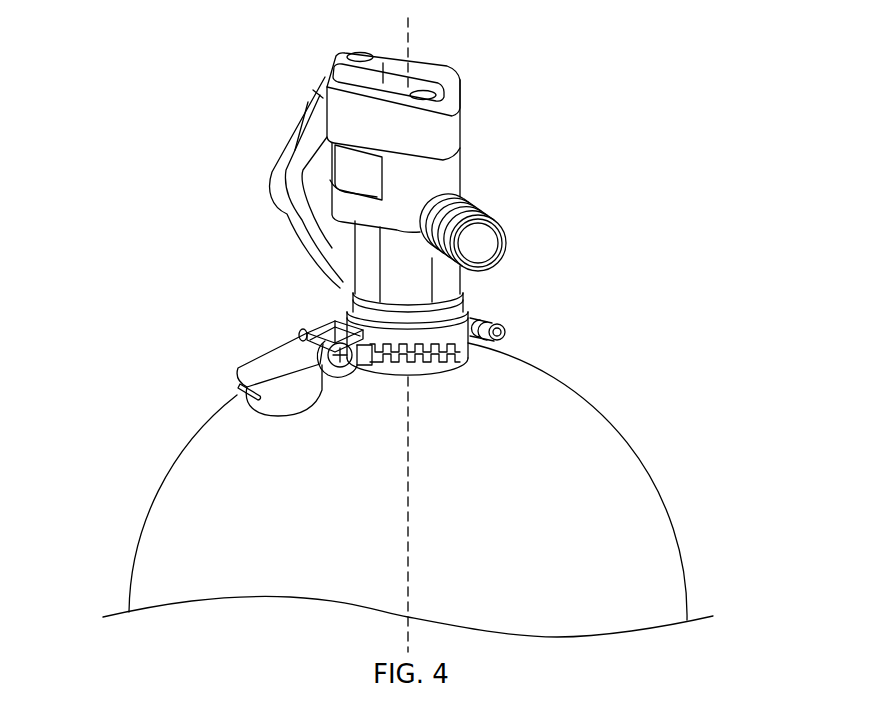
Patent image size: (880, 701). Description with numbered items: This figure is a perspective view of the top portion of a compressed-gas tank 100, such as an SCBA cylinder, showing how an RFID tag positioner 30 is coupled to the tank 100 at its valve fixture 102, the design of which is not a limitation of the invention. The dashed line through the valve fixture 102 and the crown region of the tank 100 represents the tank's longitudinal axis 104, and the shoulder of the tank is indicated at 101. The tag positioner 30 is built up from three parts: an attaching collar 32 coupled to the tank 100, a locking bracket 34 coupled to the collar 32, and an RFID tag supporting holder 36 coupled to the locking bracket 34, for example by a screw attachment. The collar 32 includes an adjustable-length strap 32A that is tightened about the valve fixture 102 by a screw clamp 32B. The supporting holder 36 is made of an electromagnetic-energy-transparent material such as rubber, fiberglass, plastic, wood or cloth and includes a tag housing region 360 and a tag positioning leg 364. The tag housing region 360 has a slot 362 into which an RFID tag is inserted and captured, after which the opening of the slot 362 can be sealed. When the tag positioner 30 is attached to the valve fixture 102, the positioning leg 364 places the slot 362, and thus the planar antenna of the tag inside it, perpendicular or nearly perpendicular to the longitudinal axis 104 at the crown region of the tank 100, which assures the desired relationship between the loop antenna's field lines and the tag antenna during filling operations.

The compressed-gas tank 100 is at (673, 527).
The tank shoulder 101 is at (220, 493).
The valve fixture 102 is at (603, 47).
The longitudinal axis 104 is at (408, 32).
The RFID tag positioner 30 is at (300, 308).
The attaching collar 32 is at (508, 349).
The adjustable-length strap 32A is at (460, 352).
The screw clamp 32B is at (498, 325).
The locking bracket 34 is at (357, 366).
The RFID tag supporting holder 36 is at (265, 358).
The tag housing region 360 is at (236, 377).
The slot 362 is at (240, 392).
The tag positioning leg 364 is at (273, 407).